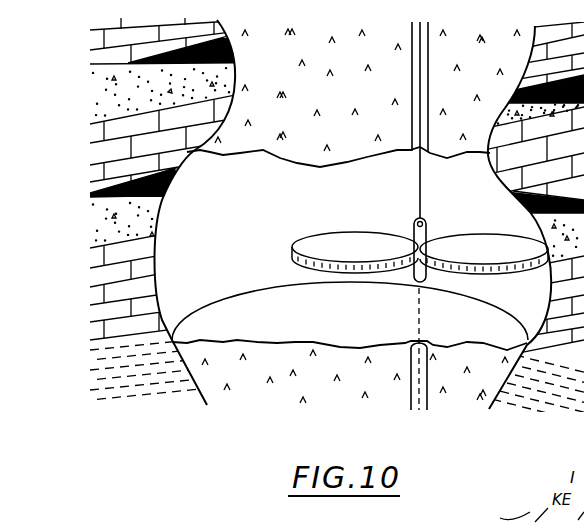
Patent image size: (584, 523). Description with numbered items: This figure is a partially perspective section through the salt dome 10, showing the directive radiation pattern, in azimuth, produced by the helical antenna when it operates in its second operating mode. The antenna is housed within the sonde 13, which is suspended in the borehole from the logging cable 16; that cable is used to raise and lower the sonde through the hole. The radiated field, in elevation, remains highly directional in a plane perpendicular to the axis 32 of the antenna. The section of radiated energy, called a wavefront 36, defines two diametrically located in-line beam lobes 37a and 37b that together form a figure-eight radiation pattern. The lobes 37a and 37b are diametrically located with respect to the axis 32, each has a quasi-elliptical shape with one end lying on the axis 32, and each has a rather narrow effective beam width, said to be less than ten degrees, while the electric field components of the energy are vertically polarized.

The salt dome 10 is at (350, 105).
The sonde 13 is at (413, 235).
The logging cable 16 is at (418, 188).
The axis of the antenna 32 is at (417, 313).
The wavefront 36 is at (372, 229).
The beam lobe 37a is at (330, 250).
The beam lobe 37b is at (502, 250).